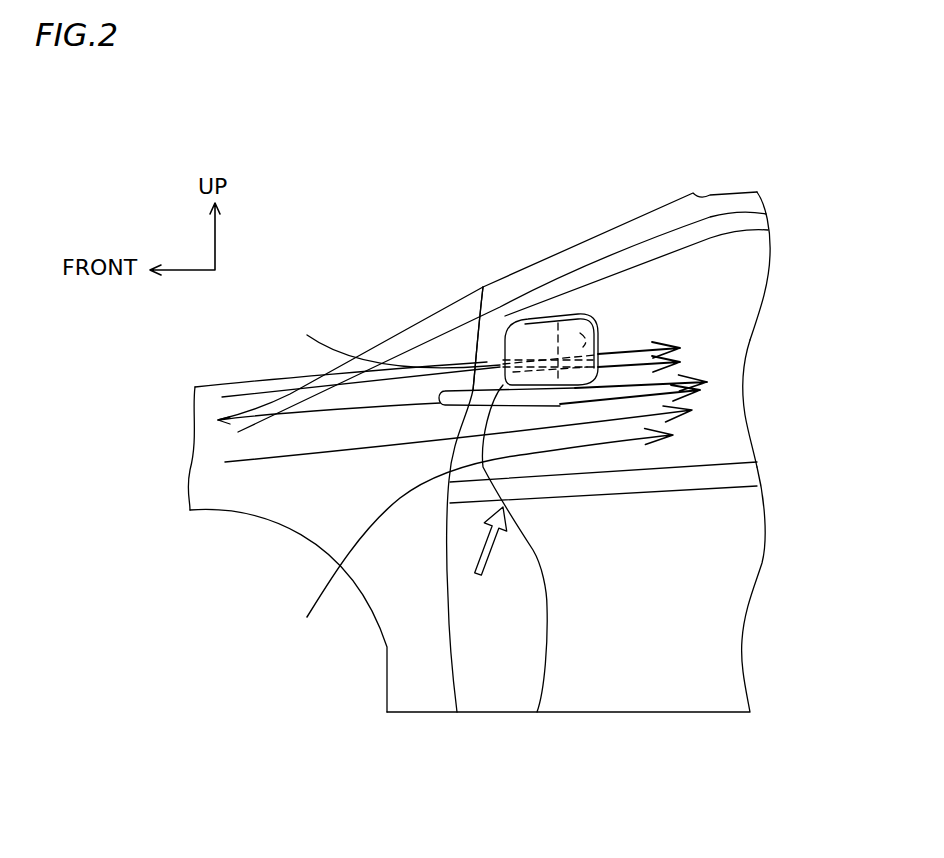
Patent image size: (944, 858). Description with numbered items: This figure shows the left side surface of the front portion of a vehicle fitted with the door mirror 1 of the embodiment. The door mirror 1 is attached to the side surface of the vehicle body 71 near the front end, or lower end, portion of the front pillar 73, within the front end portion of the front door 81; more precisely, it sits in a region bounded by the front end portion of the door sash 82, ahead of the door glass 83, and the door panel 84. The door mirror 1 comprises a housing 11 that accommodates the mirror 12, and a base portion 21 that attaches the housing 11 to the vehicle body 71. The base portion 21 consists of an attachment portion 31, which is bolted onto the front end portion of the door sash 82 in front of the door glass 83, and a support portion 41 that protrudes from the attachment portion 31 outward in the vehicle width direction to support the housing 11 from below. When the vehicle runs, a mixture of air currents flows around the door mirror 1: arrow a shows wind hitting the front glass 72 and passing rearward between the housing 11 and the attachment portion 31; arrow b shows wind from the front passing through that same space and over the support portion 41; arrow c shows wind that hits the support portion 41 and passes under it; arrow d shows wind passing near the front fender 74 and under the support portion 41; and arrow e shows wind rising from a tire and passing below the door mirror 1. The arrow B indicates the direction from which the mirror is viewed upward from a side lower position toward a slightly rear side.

The door mirror 1 is at (575, 275).
The housing 11 is at (573, 309).
The mirror 12 is at (588, 307).
The base portion 21 is at (516, 569).
The attachment portion 31 is at (483, 300).
The support portion 41 is at (529, 408).
The vehicle body 71 is at (357, 280).
The front glass 72 is at (438, 325).
The front pillar 73 is at (520, 307).
The front fender 74 is at (293, 502).
The front door 81 is at (444, 605).
The door sash 82 is at (757, 217).
The door glass 83 is at (750, 300).
The door panel 84 is at (730, 428).
The arrow a is at (488, 339).
The arrow b is at (439, 383).
The arrow c is at (323, 424).
The arrow d is at (448, 443).
The arrow e is at (483, 536).
The arrow B is at (486, 556).